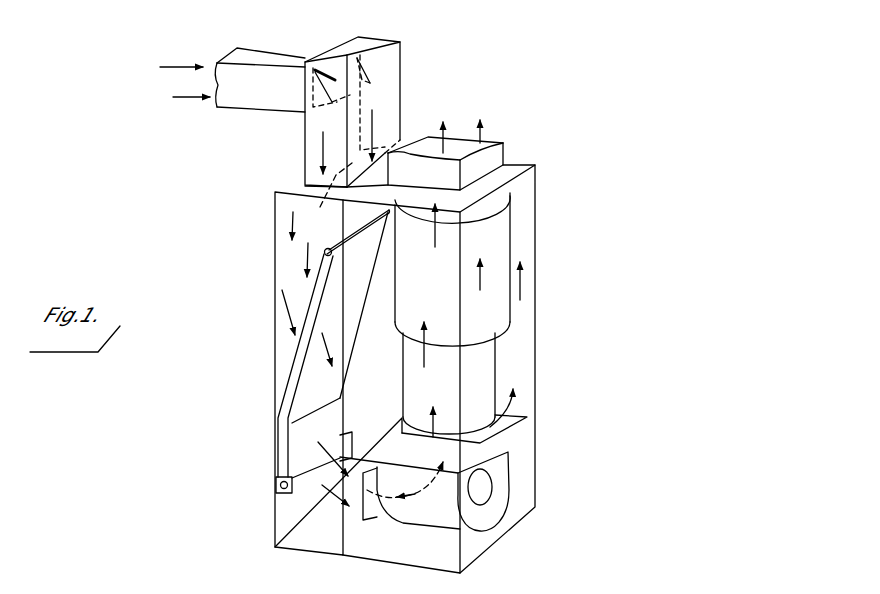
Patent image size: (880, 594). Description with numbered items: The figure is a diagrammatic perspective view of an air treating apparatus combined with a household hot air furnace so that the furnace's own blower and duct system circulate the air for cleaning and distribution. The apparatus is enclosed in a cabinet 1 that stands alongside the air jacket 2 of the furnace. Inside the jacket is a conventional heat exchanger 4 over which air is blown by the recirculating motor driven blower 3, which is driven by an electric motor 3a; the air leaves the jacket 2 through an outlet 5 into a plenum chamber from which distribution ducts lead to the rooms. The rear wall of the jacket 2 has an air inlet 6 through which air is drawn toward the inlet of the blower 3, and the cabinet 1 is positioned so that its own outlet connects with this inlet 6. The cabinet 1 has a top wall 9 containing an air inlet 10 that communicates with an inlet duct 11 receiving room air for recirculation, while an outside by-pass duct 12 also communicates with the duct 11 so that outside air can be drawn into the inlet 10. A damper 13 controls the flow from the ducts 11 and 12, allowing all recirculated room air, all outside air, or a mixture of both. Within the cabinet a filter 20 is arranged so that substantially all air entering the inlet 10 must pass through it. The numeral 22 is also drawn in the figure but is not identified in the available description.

The cabinet 1 is at (272, 368).
The air jacket 2 is at (535, 188).
The blower 3 is at (497, 507).
The electric motor 3a is at (480, 487).
The heat exchanger 4 is at (505, 245).
The outlet 5 is at (497, 153).
The air inlet 6 is at (338, 528).
The top wall 9 is at (297, 186).
The air inlet 10 is at (329, 197).
The inlet duct 11 is at (310, 157).
The outside by-pass duct 12 is at (233, 103).
The damper 13 is at (302, 103).
The filter 20 is at (290, 345).
The hinge 22 is at (275, 491).